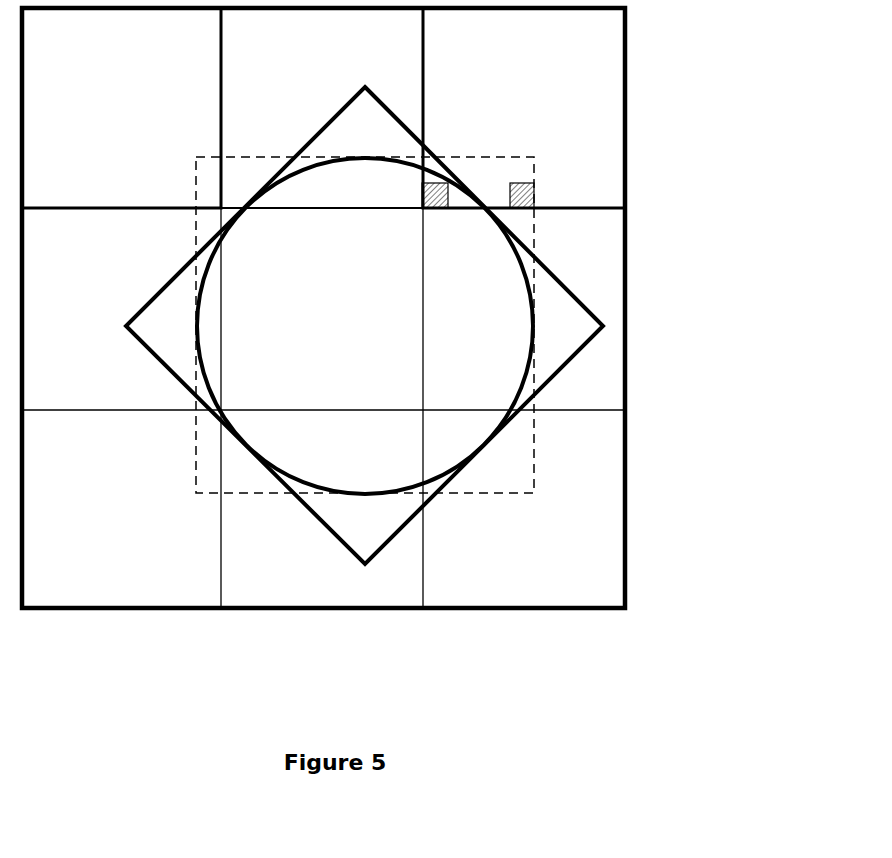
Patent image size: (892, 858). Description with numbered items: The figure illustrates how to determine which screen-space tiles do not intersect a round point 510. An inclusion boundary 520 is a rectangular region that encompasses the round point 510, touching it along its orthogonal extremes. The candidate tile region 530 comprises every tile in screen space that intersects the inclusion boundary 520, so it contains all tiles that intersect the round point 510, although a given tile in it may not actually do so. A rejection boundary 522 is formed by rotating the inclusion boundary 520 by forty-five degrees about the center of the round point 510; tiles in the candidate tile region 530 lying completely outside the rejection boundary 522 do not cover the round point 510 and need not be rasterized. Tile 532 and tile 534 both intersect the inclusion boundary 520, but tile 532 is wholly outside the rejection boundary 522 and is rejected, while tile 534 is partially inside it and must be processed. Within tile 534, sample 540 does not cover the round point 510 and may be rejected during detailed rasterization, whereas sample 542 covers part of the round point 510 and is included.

The round point 510 is at (523, 382).
The inclusion boundary 520 is at (196, 480).
The rejection boundary 522 is at (126, 327).
The candidate tile region 530 is at (440, 610).
The tile 532 is at (121, 108).
The tile 534 is at (524, 108).
The sample 540 is at (535, 200).
The sample 542 is at (435, 212).